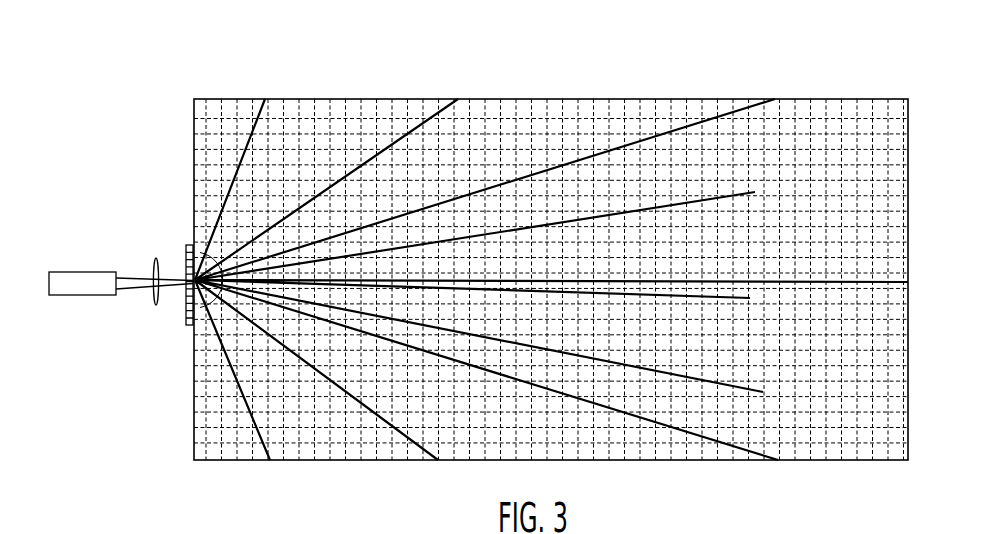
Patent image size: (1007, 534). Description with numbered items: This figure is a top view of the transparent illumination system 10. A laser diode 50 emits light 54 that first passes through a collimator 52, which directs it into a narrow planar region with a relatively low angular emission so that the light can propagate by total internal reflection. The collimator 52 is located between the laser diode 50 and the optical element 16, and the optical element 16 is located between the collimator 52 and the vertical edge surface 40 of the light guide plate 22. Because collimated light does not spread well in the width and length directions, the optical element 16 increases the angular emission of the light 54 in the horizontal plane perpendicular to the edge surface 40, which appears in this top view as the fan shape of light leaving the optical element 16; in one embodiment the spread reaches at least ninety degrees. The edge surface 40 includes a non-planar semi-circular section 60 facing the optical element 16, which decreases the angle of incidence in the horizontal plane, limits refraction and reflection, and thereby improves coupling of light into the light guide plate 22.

The transparent illumination system 10 is at (125, 48).
The optical element 16 is at (187, 245).
The light guide plate 22 is at (828, 79).
The vertical edge surface 40 is at (193, 174).
The laser diode 50 is at (78, 296).
The collimator 52 is at (156, 306).
The light 54 is at (178, 290).
The semi-circular section 60 is at (198, 270).